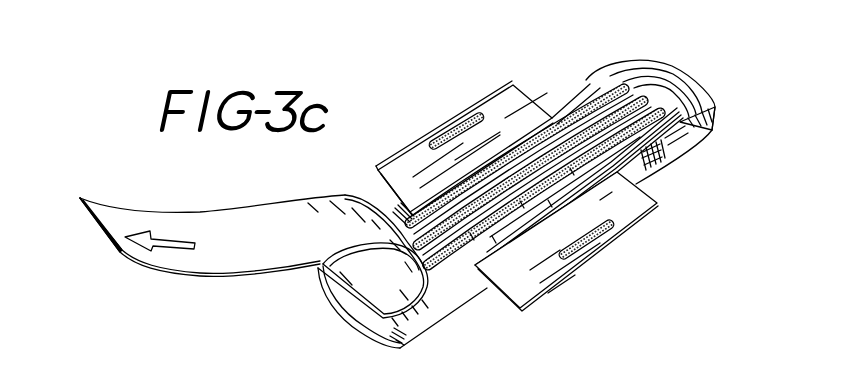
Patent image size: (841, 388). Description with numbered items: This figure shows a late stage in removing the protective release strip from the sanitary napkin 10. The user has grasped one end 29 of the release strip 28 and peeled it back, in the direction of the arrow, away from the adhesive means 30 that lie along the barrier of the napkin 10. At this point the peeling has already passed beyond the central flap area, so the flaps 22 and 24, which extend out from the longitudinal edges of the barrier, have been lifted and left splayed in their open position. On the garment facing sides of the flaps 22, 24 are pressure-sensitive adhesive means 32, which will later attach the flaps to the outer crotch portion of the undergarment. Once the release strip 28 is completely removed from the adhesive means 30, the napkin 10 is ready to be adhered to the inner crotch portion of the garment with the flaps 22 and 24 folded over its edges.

The napkin 10 is at (527, 174).
The flap 22 is at (520, 97).
The flap 24 is at (628, 202).
The release strip 28 is at (230, 220).
The end of the release strip 29 is at (102, 240).
The adhesive means 30 is at (645, 102).
The pressure-sensitive adhesive means 32 is at (462, 120).